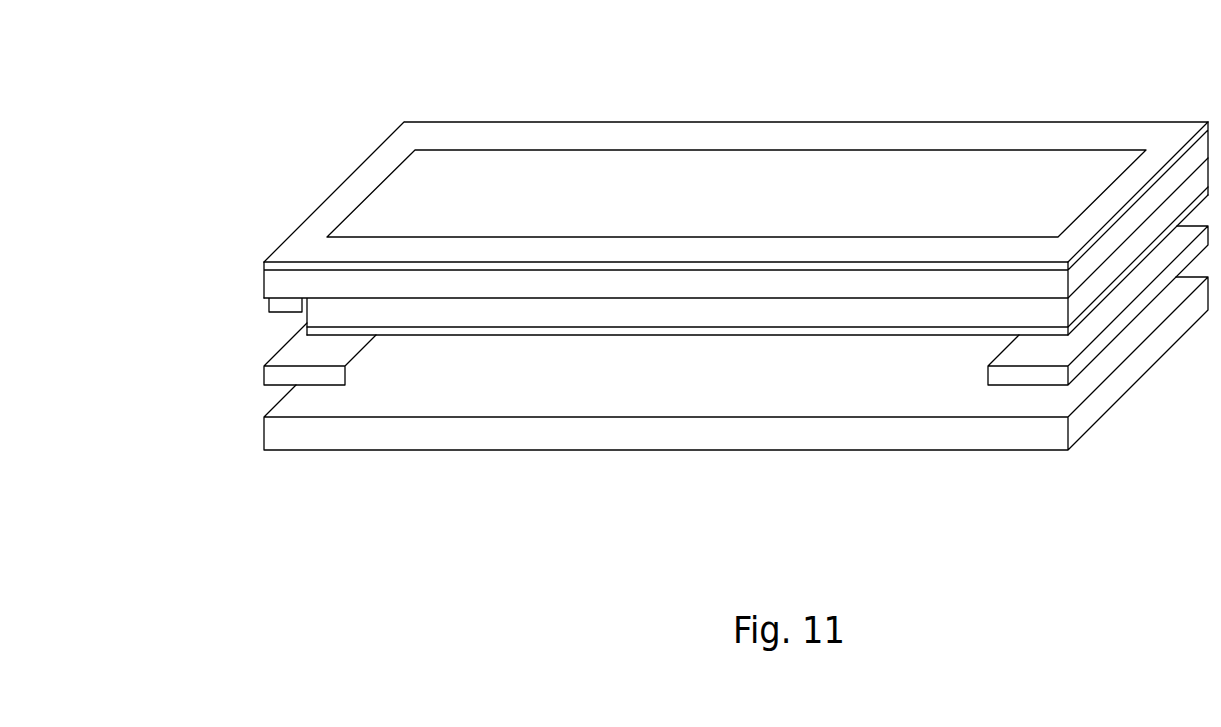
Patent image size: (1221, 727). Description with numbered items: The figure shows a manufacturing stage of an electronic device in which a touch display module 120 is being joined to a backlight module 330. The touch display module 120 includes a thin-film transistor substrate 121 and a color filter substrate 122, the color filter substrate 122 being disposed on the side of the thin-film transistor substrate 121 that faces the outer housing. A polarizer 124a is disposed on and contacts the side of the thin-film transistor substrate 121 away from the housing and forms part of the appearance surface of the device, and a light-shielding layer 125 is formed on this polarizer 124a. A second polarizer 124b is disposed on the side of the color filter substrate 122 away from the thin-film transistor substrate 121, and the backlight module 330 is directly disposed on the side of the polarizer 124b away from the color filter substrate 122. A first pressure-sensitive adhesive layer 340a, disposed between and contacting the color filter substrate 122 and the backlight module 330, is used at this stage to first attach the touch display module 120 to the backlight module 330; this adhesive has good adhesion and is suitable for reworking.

The touch display module 120 is at (1046, 82).
The thin-film transistor substrate 121 is at (268, 281).
The color filter substrate 122 is at (310, 317).
The polarizer 124a is at (777, 157).
The polarizer 124b is at (316, 333).
The light-shielding layer 125 is at (720, 132).
The backlight module 330 is at (270, 420).
The first pressure-sensitive adhesive layer 340a is at (272, 372).